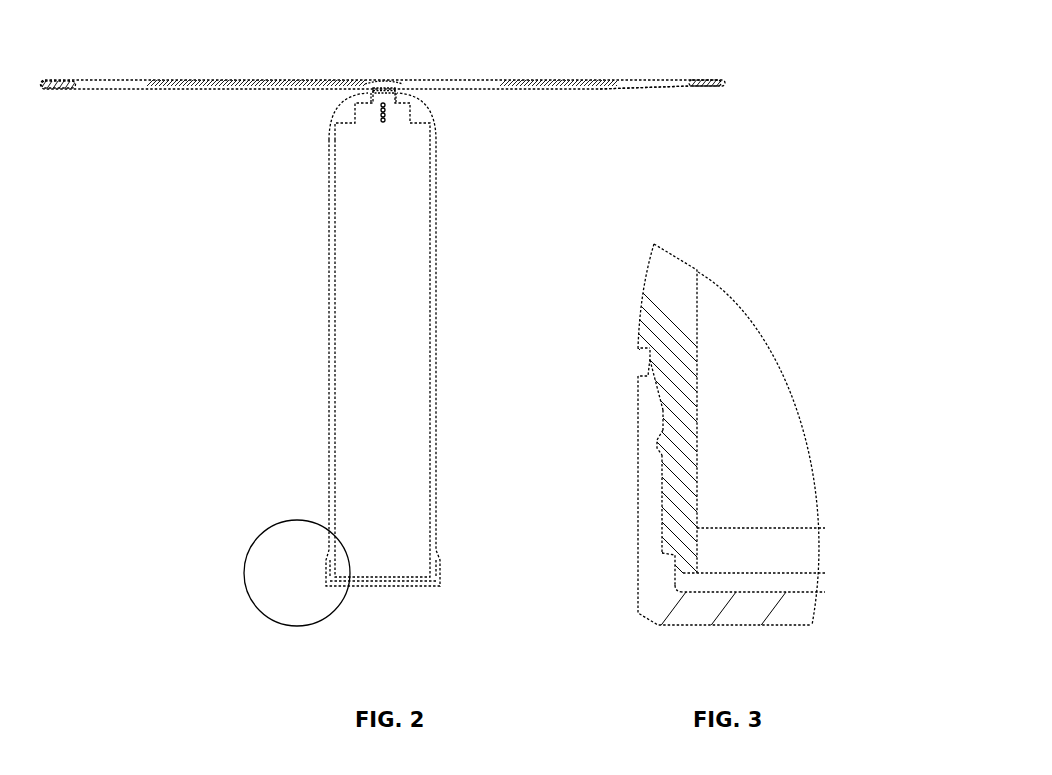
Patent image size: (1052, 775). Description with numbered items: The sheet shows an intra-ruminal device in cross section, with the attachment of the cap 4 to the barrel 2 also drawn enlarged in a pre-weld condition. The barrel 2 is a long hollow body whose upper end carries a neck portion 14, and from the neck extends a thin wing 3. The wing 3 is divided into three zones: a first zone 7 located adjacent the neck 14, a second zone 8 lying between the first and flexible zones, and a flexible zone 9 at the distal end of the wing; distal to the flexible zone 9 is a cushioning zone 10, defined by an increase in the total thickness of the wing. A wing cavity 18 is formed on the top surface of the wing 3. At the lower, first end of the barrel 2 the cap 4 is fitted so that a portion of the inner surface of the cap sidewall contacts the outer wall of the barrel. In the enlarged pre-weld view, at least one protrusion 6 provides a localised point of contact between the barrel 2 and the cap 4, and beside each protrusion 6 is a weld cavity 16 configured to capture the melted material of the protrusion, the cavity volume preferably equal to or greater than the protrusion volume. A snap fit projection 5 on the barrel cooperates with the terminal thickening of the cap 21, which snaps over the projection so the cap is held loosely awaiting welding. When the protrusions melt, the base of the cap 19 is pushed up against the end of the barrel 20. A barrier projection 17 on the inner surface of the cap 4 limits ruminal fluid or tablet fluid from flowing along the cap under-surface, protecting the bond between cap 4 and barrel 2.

In FIG. 2, the barrel 2 is at (322, 328).
In FIG. 3, the barrel 2 is at (658, 272).
In FIG. 2, the wing 3 is at (297, 561).
In FIG. 2, the cap 4 is at (430, 560).
In FIG. 3, the cap 4 is at (658, 625).
In FIG. 3, the snap fit projection 5 is at (657, 447).
In FIG. 3, the protrusion 6 is at (673, 558).
In FIG. 2, the first zone 7 is at (457, 87).
In FIG. 2, the second zone 8 is at (537, 88).
In FIG. 2, the flexible zone 9 is at (650, 87).
In FIG. 2, the cushioning zone 10 is at (695, 88).
In FIG. 2, the neck portion 14 is at (373, 92).
In FIG. 3, the weld cavity 16 is at (662, 465).
In FIG. 3, the barrier projection 17 is at (752, 587).
In FIG. 2, the wing cavity 18 is at (375, 80).
In FIG. 3, the base of the cap 19 is at (712, 593).
In FIG. 3, the end of the barrel 20 is at (682, 567).
In FIG. 3, the terminal thickening of the cap 21 is at (658, 418).